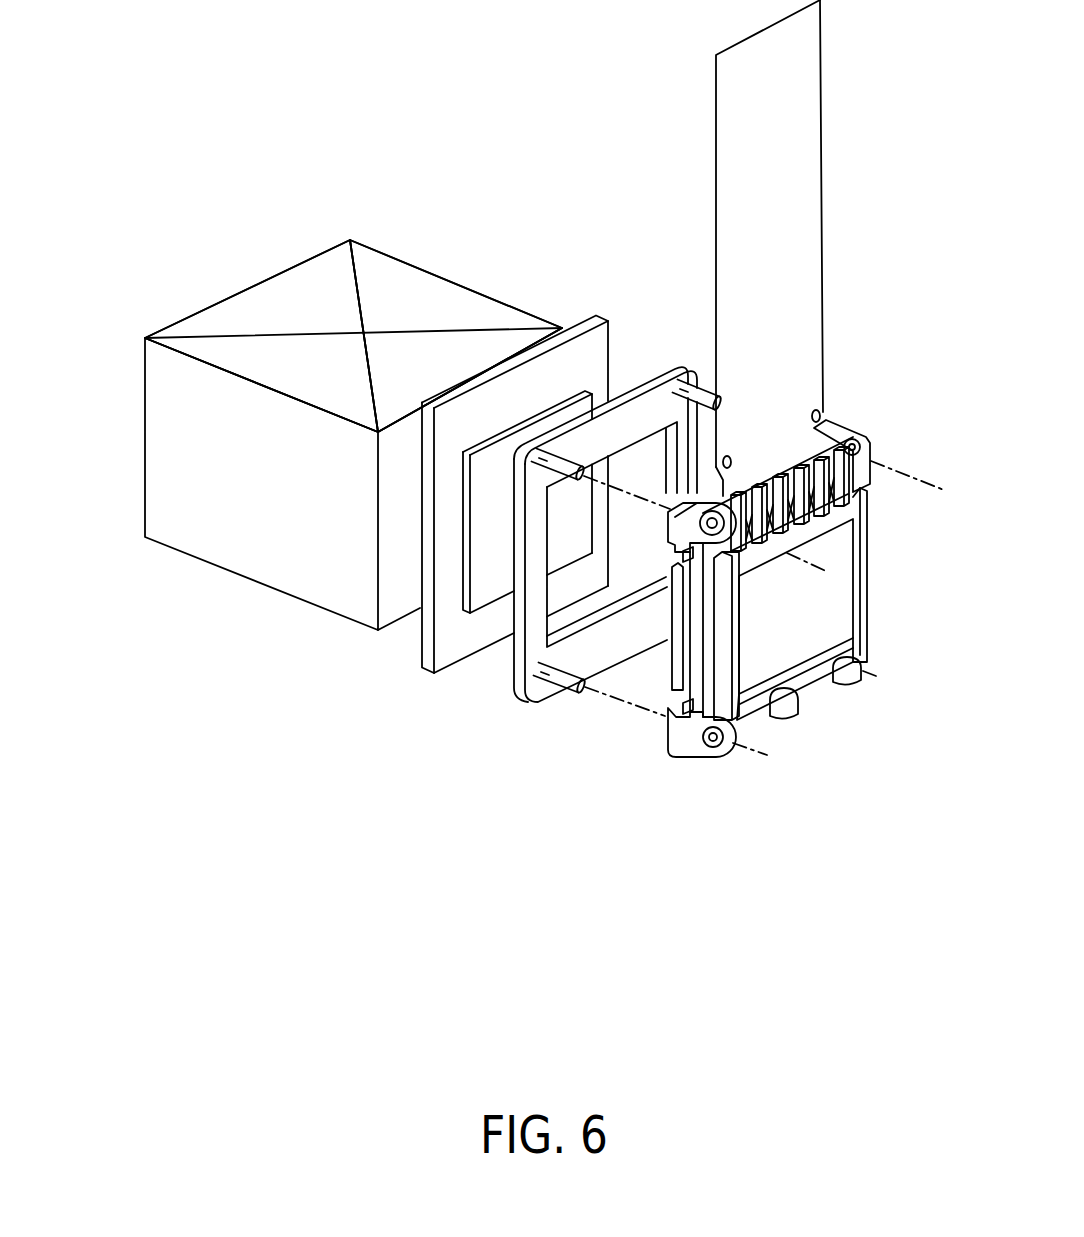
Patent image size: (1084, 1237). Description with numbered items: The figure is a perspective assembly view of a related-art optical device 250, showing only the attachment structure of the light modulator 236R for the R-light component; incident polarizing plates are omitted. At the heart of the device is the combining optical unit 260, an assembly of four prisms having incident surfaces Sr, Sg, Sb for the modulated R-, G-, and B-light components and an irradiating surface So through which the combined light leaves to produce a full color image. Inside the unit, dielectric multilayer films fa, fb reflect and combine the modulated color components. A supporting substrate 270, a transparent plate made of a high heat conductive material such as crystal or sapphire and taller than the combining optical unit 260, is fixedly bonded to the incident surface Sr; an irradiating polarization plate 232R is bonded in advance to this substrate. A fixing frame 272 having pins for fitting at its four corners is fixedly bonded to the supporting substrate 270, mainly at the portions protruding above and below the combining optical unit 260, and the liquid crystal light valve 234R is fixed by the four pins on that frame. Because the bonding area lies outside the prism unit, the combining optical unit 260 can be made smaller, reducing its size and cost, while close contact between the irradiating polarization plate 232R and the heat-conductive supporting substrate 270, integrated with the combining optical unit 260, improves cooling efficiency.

The optical device 250 is at (574, 120).
The combining optical unit 260 is at (390, 273).
The incident surface Sb is at (242, 312).
The incident surface Sg is at (478, 316).
The irradiating surface So is at (250, 560).
The incident surface Sr is at (393, 602).
The dielectric multilayer film fa is at (313, 337).
The dielectric multilayer film fb is at (368, 363).
The supporting substrate 270 is at (596, 318).
The fixing frame 272 is at (664, 373).
The irradiating polarization plate 232R is at (482, 592).
The liquid crystal light valve 234R is at (673, 707).
The light modulator 236R is at (655, 768).